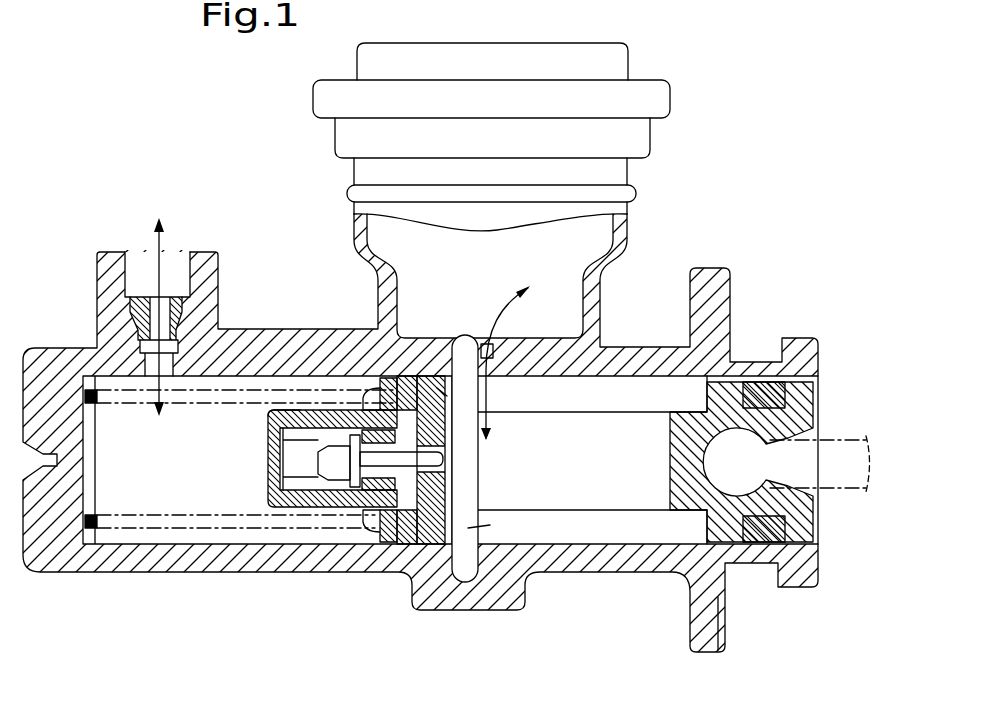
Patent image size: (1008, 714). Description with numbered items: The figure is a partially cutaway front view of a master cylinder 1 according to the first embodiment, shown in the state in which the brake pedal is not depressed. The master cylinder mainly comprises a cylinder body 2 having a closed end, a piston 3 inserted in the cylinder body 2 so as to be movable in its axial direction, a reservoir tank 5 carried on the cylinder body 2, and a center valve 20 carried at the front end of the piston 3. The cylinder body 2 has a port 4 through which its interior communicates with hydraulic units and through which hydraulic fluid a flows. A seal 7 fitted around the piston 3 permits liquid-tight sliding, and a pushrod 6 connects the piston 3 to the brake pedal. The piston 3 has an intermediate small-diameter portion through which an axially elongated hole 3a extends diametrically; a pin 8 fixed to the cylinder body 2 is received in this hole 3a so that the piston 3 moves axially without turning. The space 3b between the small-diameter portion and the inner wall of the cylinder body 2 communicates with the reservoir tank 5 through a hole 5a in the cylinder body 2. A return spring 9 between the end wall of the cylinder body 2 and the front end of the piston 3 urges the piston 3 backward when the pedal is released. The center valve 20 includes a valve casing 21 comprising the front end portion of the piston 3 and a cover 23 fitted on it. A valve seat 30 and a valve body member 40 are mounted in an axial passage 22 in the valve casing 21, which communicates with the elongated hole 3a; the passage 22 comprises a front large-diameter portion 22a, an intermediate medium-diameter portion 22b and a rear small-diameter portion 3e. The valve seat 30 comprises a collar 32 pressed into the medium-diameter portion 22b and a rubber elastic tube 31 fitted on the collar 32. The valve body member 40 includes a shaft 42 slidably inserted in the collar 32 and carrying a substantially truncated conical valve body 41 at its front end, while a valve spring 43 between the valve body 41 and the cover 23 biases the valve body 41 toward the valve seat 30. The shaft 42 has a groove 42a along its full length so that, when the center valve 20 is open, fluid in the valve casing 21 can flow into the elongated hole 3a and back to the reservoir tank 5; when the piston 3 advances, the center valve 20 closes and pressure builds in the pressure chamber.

The master cylinder 1 is at (740, 266).
The cylinder body 2 is at (42, 393).
The piston 3 is at (450, 460).
The elongated hole 3a is at (628, 472).
The space 3b is at (612, 398).
The small-diameter portion 3e is at (440, 392).
The port 4 is at (145, 278).
The reservoir tank 5 is at (529, 200).
The hole 5a is at (497, 350).
The pushrod 6 is at (835, 460).
The seal 7 is at (768, 392).
The pin 8 is at (480, 506).
The return spring 9 is at (155, 522).
The center valve 20 is at (288, 450).
The valve casing 21 is at (300, 505).
The passage 22 is at (358, 468).
The large-diameter portion 22a is at (362, 406).
The medium-diameter portion 22b is at (368, 514).
The cover 23 is at (272, 426).
The valve seat 30 is at (417, 400).
The elastic tube 31 is at (372, 432).
The collar 32 is at (397, 488).
The valve body member 40 is at (369, 470).
The valve body 41 is at (350, 488).
The shaft 42 is at (518, 508).
The groove 42a is at (526, 603).
The valve spring 43 is at (295, 492).